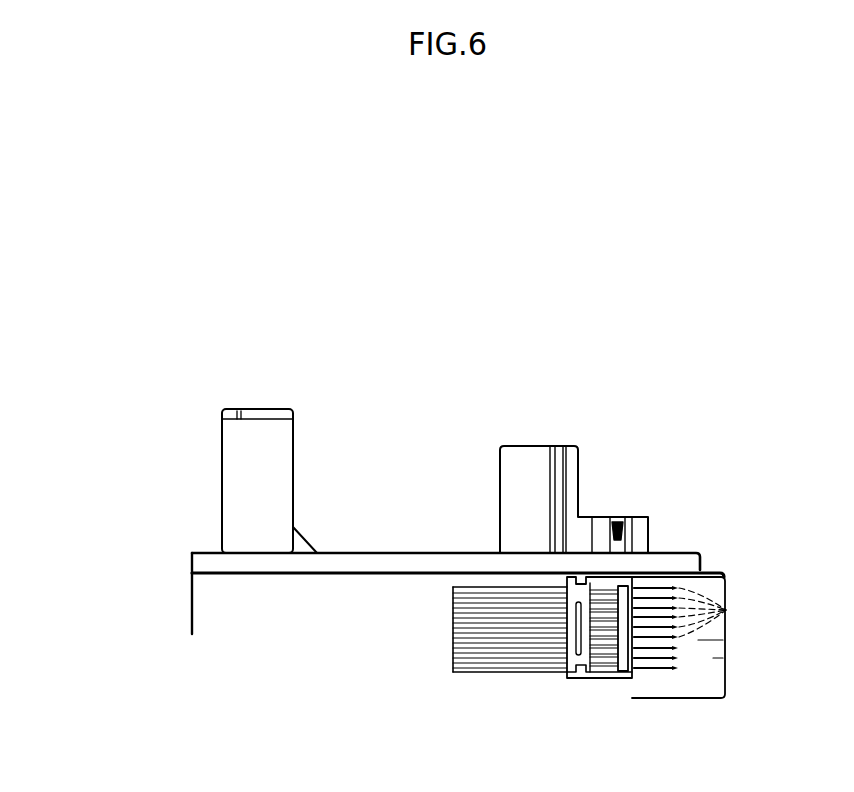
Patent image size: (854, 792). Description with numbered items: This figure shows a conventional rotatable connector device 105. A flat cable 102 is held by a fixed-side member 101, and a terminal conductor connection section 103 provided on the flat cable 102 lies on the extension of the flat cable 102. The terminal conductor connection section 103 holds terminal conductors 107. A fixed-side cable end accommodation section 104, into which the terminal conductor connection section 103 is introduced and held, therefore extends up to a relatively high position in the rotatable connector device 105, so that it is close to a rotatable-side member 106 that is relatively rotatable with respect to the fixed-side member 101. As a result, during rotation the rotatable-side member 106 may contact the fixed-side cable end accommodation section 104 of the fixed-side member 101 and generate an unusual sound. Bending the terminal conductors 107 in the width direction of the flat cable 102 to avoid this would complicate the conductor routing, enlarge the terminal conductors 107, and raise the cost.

The fixed-side member 101 is at (190, 603).
The flat cable 102 is at (500, 673).
The terminal conductor connection section 103 is at (592, 680).
The fixed-side cable end accommodation section 104 is at (708, 572).
The rotatable connector device 105 is at (597, 368).
The rotatable-side member 106 is at (189, 552).
The terminal conductors 107 is at (730, 610).